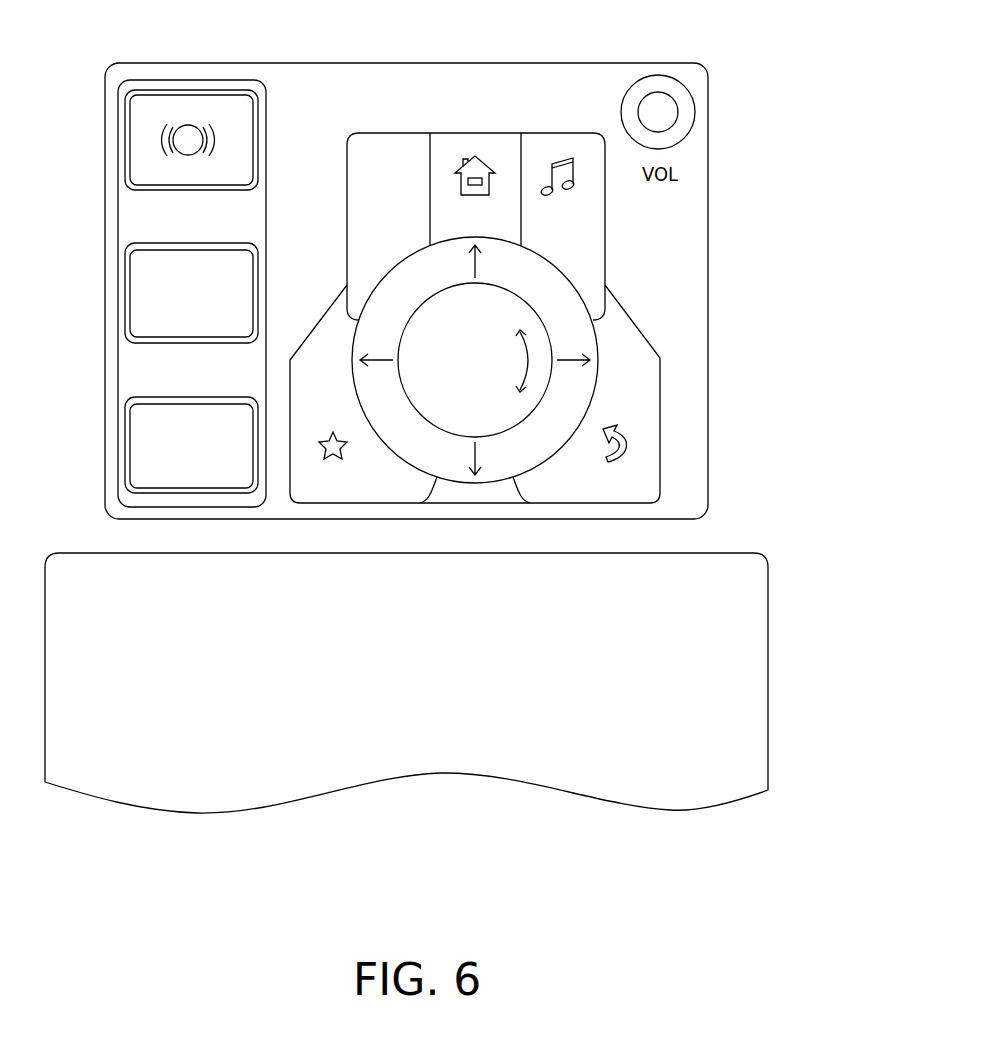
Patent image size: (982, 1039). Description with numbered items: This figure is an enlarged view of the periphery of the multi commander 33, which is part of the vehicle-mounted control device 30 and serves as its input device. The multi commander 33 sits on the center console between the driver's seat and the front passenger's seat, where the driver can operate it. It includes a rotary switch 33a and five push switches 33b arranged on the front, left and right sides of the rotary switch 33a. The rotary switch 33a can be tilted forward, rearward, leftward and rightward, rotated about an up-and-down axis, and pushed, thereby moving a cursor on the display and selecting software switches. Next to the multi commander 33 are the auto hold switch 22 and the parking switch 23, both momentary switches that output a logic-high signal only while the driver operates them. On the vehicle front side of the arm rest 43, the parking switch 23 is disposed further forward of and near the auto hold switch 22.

The vehicle-mounted control device 30 is at (760, 146).
The parking switch 23 is at (137, 133).
The auto hold switch 22 is at (137, 290).
The multi commander 33 is at (662, 338).
The rotary switch 33a is at (555, 303).
The push switches 33b is at (558, 145).
The arm rest 43 is at (750, 618).